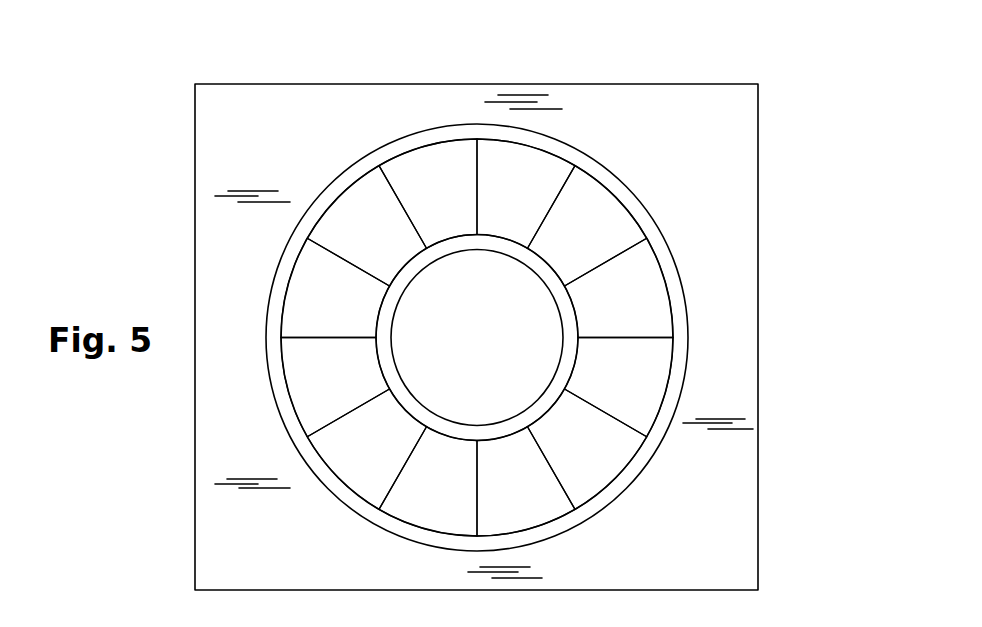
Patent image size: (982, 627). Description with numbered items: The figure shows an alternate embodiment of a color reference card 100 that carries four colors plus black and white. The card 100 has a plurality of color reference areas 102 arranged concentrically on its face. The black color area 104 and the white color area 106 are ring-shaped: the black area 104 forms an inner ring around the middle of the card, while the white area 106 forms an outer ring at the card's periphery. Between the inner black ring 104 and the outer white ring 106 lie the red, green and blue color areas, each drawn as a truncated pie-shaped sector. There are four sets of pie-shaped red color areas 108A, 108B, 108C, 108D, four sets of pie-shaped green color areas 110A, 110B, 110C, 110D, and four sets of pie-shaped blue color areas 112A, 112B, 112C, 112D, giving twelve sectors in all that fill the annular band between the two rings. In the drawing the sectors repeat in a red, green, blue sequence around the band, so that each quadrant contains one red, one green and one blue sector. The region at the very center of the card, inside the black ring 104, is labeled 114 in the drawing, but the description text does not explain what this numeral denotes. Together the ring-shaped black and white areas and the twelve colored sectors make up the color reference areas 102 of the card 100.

The color reference card 100 is at (781, 123).
The color reference areas 102 is at (694, 319).
The black color area 104 is at (385, 330).
The white color area 106 is at (351, 181).
The central region 114 is at (506, 313).
The red color area 108A is at (400, 459).
The red color area 108B is at (612, 459).
The red color area 108C is at (612, 246).
The red color area 108D is at (400, 246).
The green color area 110A is at (467, 497).
The green color area 110B is at (651, 391).
The green color area 110C is at (545, 208).
The green color area 110D is at (361, 314).
The blue color area 112A is at (545, 497).
The blue color area 112B is at (651, 314).
The blue color area 112C is at (467, 208).
The blue color area 112D is at (361, 391).